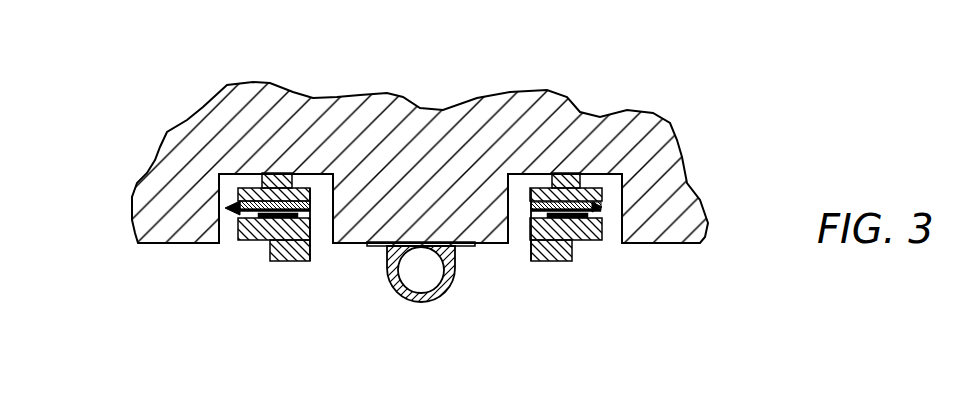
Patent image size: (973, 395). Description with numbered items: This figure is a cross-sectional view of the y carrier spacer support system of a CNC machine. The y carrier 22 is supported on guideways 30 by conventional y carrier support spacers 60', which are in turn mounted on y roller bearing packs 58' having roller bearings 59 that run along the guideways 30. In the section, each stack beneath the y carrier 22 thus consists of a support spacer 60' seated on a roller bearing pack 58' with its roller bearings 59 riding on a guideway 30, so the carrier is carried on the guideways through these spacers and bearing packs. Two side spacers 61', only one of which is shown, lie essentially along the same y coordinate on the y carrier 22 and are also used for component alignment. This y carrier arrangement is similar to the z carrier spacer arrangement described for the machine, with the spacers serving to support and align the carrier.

The y carrier 22 is at (433, 108).
The guideways 30 is at (296, 262).
The y roller bearing packs 58' is at (460, 254).
The roller bearings 59 is at (281, 263).
The y carrier support spacers 60' is at (431, 170).
The side spacers 61' is at (382, 253).